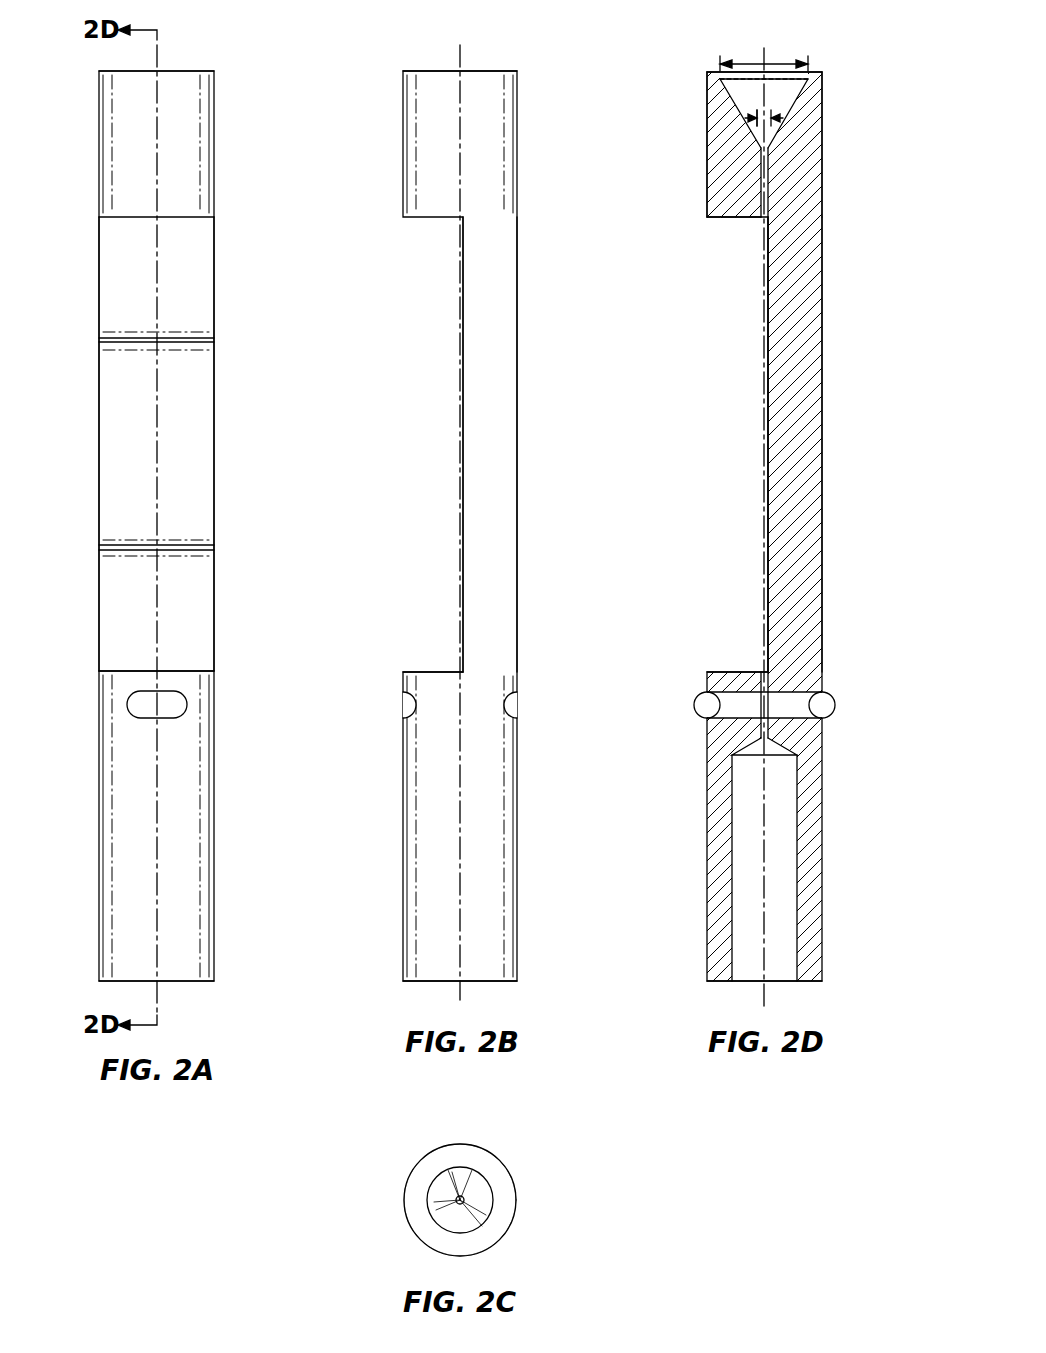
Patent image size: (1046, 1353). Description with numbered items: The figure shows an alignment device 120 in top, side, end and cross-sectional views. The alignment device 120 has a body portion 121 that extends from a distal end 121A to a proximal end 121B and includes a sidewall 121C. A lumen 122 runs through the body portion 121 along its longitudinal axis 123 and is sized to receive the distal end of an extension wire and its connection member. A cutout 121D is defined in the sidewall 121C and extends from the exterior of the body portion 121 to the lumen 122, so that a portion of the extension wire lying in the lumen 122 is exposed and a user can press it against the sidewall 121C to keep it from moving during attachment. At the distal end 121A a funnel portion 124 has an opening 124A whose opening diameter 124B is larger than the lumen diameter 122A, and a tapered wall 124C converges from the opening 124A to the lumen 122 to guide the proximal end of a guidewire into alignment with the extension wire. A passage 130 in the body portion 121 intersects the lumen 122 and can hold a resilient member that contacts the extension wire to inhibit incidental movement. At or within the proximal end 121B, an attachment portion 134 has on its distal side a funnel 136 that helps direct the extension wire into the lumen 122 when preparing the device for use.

In FIG. 2A, the alignment device 120 is at (242, 136).
In FIG. 2B, the alignment device 120 is at (547, 136).
In FIG. 2D, the alignment device 120 is at (852, 314).
In FIG. 2C, the alignment device 120 is at (428, 1135).
In FIG. 2A, the body portion 121 is at (120, 115).
In FIG. 2B, the body portion 121 is at (425, 115).
In FIG. 2D, the body portion 121 is at (728, 165).
In FIG. 2A, the distal end 121A is at (175, 72).
In FIG. 2B, the distal end 121A is at (480, 72).
In FIG. 2D, the distal end 121A is at (810, 72).
In FIG. 2C, the distal end 121A is at (482, 1160).
In FIG. 2A, the proximal end 121B is at (175, 983).
In FIG. 2B, the proximal end 121B is at (480, 983).
In FIG. 2D, the proximal end 121B is at (808, 983).
In FIG. 2A, the sidewall 121C is at (120, 190).
In FIG. 2B, the sidewall 121C is at (425, 190).
In FIG. 2D, the sidewall 121C is at (800, 175).
In FIG. 2C, the sidewall 121C is at (420, 1240).
In FIG. 2A, the cutout 121D is at (120, 437).
In FIG. 2B, the cutout 121D is at (425, 437).
In FIG. 2D, the cutout 121D is at (730, 437).
In FIG. 2D, the lumen 122 is at (765, 220).
In FIG. 2C, the lumen 122 is at (456, 1196).
In FIG. 2D, the lumen diameter 122A is at (752, 118).
In FIG. 2A, the longitudinal axis 123 is at (155, 607).
In FIG. 2B, the longitudinal axis 123 is at (462, 555).
In FIG. 2D, the longitudinal axis 123 is at (766, 556).
In FIG. 2D, the funnel portion 124 is at (793, 92).
In FIG. 2C, the funnel portion 124 is at (480, 1193).
In FIG. 2D, the opening 124A is at (800, 77).
In FIG. 2D, the opening diameter 124B is at (748, 70).
In FIG. 2D, the tapered wall 124C is at (790, 118).
In FIG. 2A, the passage 130 is at (135, 703).
In FIG. 2B, the passage 130 is at (407, 708).
In FIG. 2D, the passage 130 is at (730, 705).
In FIG. 2D, the attachment portion 134 is at (745, 858).
In FIG. 2D, the funnel 136 is at (740, 757).